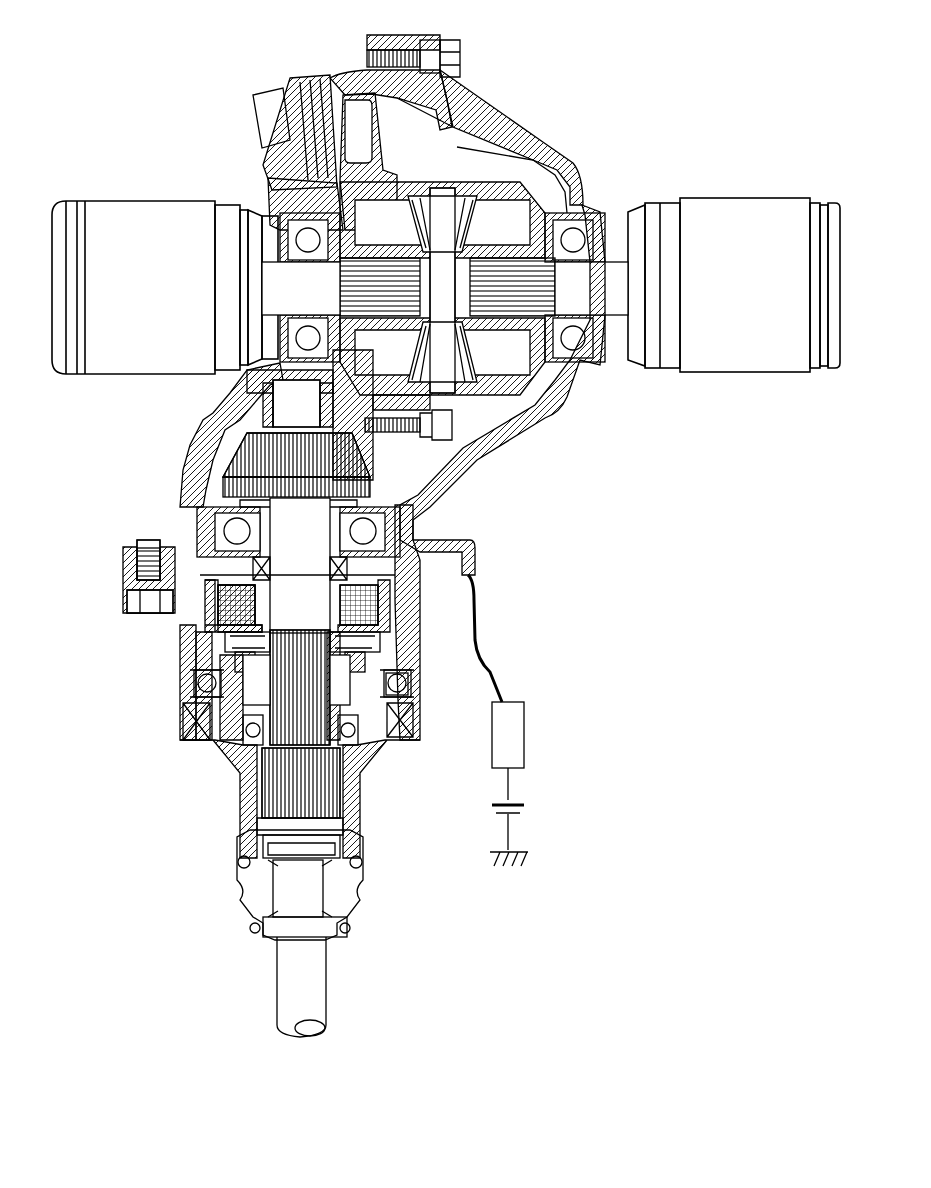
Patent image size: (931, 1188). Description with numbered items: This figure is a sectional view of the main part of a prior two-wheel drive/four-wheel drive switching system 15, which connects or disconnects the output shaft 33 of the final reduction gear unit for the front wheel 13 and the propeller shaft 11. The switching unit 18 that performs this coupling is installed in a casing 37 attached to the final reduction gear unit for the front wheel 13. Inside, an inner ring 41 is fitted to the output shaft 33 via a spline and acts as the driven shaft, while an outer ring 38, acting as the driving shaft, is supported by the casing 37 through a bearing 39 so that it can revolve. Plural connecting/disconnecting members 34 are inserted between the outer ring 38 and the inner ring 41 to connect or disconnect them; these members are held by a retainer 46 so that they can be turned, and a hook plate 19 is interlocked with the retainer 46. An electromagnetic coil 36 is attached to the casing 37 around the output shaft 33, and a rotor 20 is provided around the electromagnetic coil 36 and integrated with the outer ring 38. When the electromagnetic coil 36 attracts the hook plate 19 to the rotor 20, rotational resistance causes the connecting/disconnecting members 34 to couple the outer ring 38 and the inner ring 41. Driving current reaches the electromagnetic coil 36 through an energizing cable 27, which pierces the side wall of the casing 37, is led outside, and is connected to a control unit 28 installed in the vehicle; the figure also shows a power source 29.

The propeller shaft 11 is at (310, 992).
The final reduction gear unit for the front wheel 13 is at (504, 140).
The two-wheel drive/four-wheel drive switching system 15 is at (175, 758).
The switching unit 18 is at (183, 628).
The hook plate 19 is at (380, 641).
The rotor 20 is at (395, 602).
The energizing cable 27 is at (485, 650).
The control unit 28 is at (521, 735).
The power source 29 is at (522, 812).
The output shaft 33 is at (275, 527).
The connecting/disconnecting members 34 is at (230, 690).
The electromagnetic coil 36 is at (238, 598).
The casing 37 is at (183, 660).
The outer ring 38 is at (352, 752).
The bearing 39 is at (397, 683).
The inner ring 41 is at (205, 718).
The retainer 46 is at (250, 728).